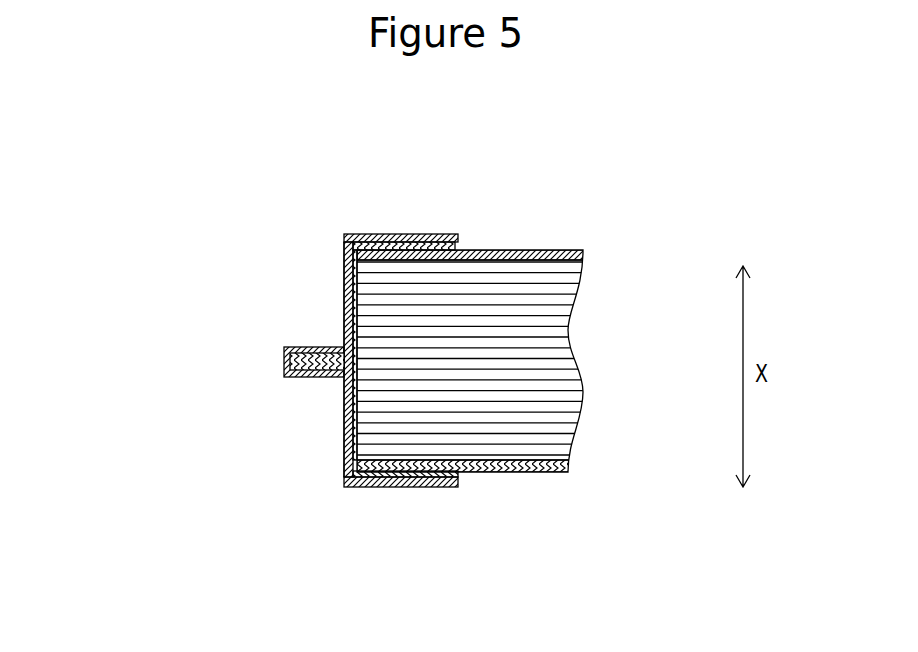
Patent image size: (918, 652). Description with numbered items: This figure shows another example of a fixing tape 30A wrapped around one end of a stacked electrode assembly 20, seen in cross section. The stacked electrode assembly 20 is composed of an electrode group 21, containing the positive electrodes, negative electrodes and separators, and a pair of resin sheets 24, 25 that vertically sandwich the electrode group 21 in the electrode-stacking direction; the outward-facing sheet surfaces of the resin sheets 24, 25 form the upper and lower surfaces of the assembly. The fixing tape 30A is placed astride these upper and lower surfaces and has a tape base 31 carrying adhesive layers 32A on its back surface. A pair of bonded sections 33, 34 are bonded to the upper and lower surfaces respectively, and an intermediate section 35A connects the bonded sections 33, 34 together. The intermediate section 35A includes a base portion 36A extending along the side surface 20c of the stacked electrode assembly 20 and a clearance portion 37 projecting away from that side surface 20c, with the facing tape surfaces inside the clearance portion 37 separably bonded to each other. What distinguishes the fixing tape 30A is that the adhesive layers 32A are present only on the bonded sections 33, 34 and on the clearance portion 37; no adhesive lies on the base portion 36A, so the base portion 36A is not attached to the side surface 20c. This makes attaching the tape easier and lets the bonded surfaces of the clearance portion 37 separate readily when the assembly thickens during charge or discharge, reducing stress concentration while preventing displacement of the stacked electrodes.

The stacked electrode assembly 20 is at (528, 354).
The side surface 20c is at (344, 272).
The electrode group 21 is at (553, 357).
The resin sheet 24 is at (583, 250).
The resin sheet 25 is at (564, 473).
The fixing tape 30A is at (343, 330).
The tape base 31 is at (450, 234).
The adhesive layer 32A is at (455, 247).
The bonded section 33 is at (426, 234).
The bonded section 34 is at (427, 488).
The intermediate section 35A is at (243, 352).
The base portion 36A is at (353, 283).
The clearance portion 37 is at (273, 359).